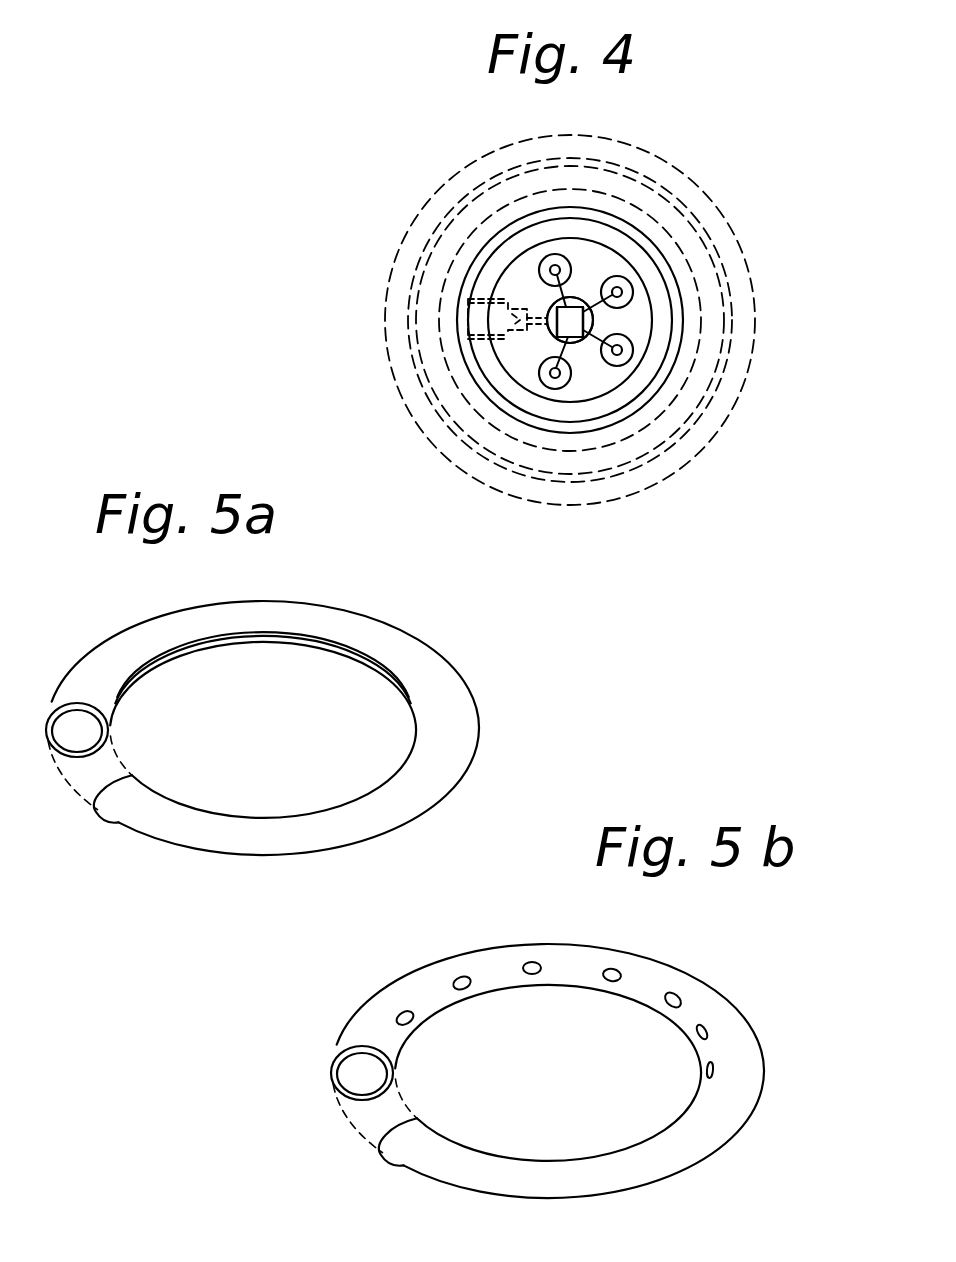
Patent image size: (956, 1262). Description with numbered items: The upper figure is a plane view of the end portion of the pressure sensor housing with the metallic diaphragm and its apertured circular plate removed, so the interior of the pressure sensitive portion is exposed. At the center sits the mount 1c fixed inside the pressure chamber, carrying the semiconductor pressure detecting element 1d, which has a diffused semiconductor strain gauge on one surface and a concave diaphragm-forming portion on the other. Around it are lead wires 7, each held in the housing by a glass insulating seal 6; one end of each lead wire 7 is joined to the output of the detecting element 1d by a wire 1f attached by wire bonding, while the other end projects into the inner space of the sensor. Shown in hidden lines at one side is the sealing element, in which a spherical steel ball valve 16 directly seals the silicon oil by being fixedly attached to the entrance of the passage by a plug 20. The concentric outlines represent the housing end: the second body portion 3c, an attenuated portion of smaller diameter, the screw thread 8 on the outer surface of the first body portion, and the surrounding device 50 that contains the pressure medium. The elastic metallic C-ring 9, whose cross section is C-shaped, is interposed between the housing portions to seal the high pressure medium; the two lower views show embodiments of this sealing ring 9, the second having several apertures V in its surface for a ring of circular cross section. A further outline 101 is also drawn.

In FIG. 4, the steel ball valve 16 is at (510, 316).
In FIG. 4, the second body portion 3c is at (660, 262).
In FIG. 4, the inner disc 101 is at (637, 298).
In FIG. 4, the screw thread 8 is at (749, 316).
In FIG. 4, the semiconductor pressure detecting element 1d is at (584, 319).
In FIG. 4, the device 50 is at (673, 372).
In FIG. 4, the C-ring 9 is at (672, 433).
In FIG. 5A, the C-ring 9 is at (466, 704).
In FIG. 5B, the C-ring 9 is at (748, 1051).
In FIG. 4, the mount 1c is at (571, 347).
In FIG. 4, the insulating seal 6 is at (560, 342).
In FIG. 4, the lead wire 7 is at (557, 378).
In FIG. 4, the wire 1f is at (556, 347).
In FIG. 4, the plug 20 is at (557, 335).
In FIG. 5B, the apertures V is at (674, 995).